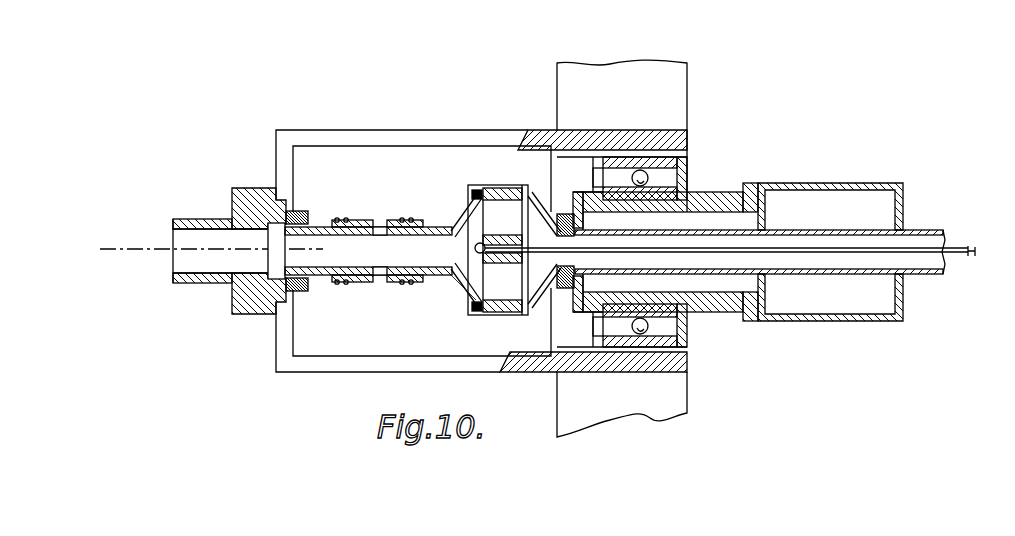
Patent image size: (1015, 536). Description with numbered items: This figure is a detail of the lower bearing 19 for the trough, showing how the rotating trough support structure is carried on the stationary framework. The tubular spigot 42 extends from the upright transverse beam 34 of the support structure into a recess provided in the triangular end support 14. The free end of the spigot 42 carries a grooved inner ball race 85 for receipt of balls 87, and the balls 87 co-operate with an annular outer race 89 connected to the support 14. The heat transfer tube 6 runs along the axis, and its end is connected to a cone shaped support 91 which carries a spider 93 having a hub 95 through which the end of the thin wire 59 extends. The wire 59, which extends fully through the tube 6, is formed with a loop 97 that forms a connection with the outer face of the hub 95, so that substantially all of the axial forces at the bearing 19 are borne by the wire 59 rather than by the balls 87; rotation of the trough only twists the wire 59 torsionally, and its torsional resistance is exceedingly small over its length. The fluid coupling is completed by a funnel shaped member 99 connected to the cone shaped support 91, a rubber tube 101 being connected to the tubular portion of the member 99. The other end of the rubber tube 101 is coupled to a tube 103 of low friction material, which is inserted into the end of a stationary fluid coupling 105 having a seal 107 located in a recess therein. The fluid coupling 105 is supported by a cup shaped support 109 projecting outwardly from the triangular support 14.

The heat transfer tube 6 is at (922, 230).
The triangular end support 14 is at (670, 105).
The lower bearing 19 is at (444, 129).
The upright transverse beam 34 is at (883, 185).
The tubular spigot 42 is at (713, 200).
The thin wire 59 is at (968, 243).
The grooved inner ball race 85 is at (657, 316).
The balls 87 is at (680, 360).
The annular outer race 89 is at (632, 338).
The cone shaped support 91 is at (560, 213).
The spider 93 is at (502, 215).
The hub 95 is at (480, 254).
The loop 97 is at (472, 277).
The funnel shaped member 99 is at (440, 224).
The rubber tube 101 is at (380, 226).
The tube of low friction material 103 is at (322, 228).
The stationary fluid coupling 105 is at (233, 207).
The seal 107 is at (298, 211).
The cup shaped support 109 is at (356, 136).